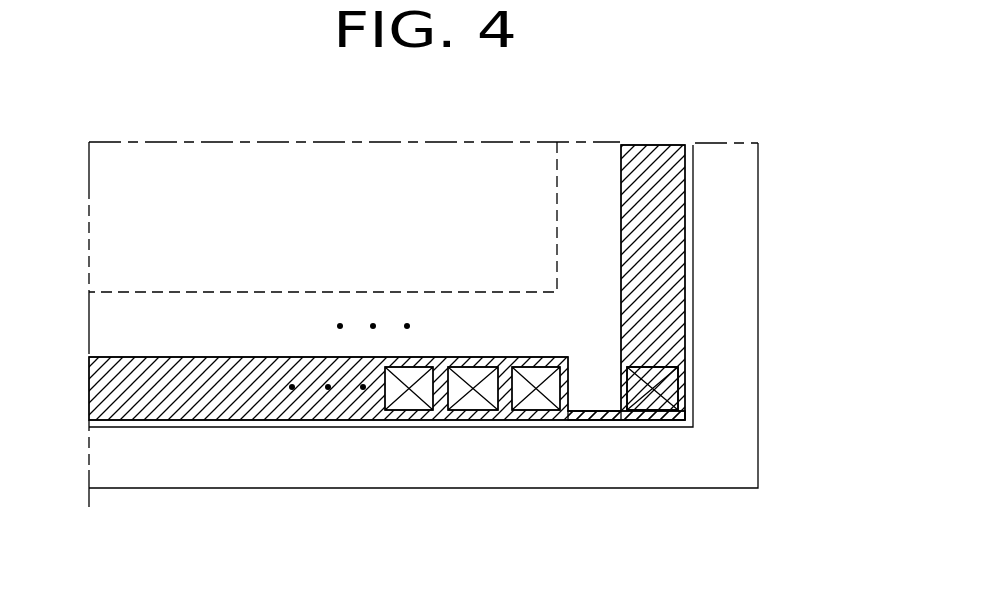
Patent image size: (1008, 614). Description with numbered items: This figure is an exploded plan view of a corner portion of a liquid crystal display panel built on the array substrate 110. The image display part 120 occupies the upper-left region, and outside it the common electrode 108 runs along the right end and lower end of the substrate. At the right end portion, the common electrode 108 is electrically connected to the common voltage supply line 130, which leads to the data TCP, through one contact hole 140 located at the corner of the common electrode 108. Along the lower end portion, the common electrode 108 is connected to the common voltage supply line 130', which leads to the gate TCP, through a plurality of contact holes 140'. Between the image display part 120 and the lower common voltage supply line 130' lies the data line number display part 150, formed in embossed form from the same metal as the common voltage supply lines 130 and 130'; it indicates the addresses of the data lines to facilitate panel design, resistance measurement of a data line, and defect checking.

The common electrode 108 is at (692, 253).
The array substrate 110 is at (740, 300).
The image display part 120 is at (258, 292).
The common voltage supply line 130 is at (703, 282).
The common voltage supply line 130' is at (387, 456).
The contact hole 140 is at (732, 388).
The contact holes 140' is at (472, 461).
The data line number display part 150 is at (530, 342).